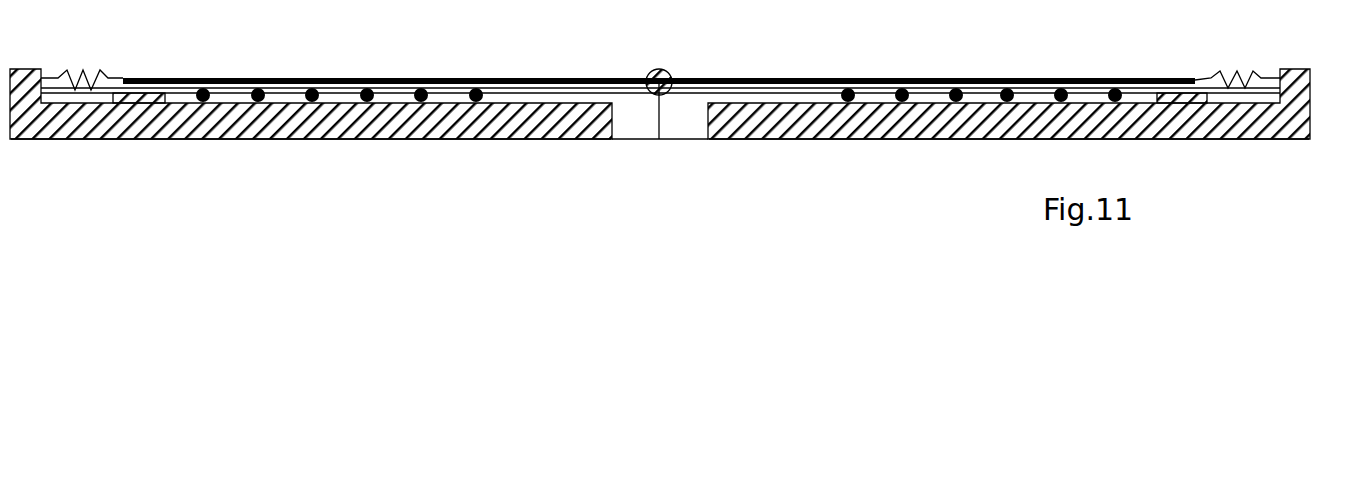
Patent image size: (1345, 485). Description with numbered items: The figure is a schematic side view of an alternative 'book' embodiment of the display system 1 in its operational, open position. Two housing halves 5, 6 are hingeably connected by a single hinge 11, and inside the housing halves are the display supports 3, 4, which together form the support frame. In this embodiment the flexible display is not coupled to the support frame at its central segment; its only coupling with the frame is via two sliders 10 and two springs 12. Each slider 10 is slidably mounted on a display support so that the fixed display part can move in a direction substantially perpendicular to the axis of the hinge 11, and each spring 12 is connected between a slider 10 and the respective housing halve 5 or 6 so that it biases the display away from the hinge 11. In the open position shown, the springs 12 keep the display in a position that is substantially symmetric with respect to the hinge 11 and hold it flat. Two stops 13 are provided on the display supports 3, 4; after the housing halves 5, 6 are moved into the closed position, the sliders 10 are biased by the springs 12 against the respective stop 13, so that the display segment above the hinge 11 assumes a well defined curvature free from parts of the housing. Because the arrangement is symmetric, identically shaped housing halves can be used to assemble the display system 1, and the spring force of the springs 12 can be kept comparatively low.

The display system 1 is at (750, 183).
The display support 3 is at (437, 125).
The display support 4 is at (917, 125).
The housing halve 5 is at (323, 145).
The housing halve 6 is at (963, 145).
The slider element 10 is at (421, 80).
The hinge 11 is at (658, 69).
The spring 12 is at (100, 70).
The stop 13 is at (142, 100).